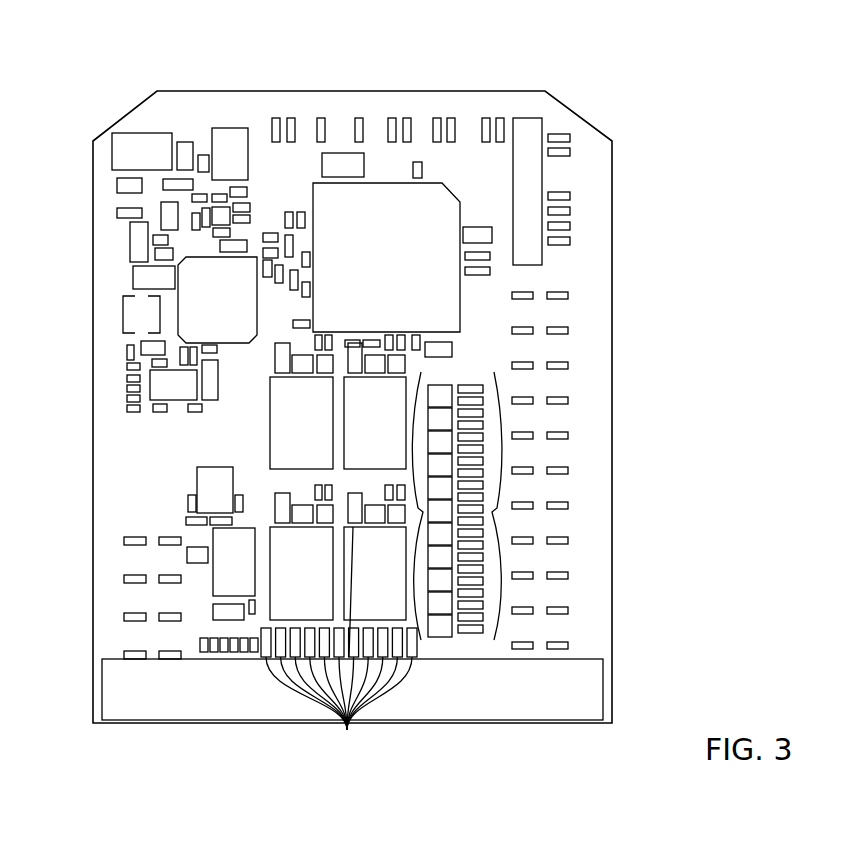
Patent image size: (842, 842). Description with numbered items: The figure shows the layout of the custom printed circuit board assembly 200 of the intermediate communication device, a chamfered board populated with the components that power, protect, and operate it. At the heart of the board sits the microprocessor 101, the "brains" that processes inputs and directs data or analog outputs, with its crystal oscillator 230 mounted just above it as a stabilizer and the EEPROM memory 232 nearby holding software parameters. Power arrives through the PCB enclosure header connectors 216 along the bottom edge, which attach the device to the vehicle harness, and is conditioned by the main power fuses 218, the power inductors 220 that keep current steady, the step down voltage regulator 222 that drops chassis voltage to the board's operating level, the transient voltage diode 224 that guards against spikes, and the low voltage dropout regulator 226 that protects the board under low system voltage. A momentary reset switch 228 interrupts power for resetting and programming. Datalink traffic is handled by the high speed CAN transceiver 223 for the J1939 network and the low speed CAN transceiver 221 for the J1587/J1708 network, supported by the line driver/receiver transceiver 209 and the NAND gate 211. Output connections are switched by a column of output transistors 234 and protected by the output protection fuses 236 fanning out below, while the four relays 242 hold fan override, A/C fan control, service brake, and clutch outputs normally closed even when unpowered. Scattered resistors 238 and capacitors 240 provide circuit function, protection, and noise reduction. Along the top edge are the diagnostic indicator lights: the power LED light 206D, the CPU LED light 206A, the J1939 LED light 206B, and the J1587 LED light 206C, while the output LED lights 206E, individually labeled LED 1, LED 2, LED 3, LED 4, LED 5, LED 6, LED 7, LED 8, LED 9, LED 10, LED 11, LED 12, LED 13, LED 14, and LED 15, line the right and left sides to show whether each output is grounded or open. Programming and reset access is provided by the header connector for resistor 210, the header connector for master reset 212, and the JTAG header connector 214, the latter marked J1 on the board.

The circuit board assembly 200 is at (566, 108).
The microprocessor 101 is at (400, 268).
The CPU LED light 206A is at (392, 118).
The J1939 LED light 206B is at (437, 118).
The J1587 LED light 206C is at (486, 118).
The power LED light 206D is at (276, 118).
The output LED lights 206E is at (568, 401).
The line driver/receiver transceiver 209 is at (229, 499).
The header connector for resistor 210 is at (163, 184).
The NAND gate 211 is at (248, 570).
The header connector for master reset 212 is at (492, 236).
The JTAG header connector 214 is at (545, 168).
The connector J1 is at (552, 182).
The PCB enclosure header connectors 216 is at (571, 705).
The main power fuses 218 is at (117, 212).
The power inductors 220 is at (231, 305).
The low speed CAN transceiver 221 is at (212, 610).
The step down voltage regulator 222 is at (188, 395).
The high speed CAN transceiver 223 is at (161, 210).
The transient voltage diode 224 is at (168, 287).
The low voltage dropout regulator 226 is at (155, 161).
The momentary reset switch 228 is at (243, 166).
The crystal oscillator 230 is at (357, 174).
The EEPROM memory 232 is at (482, 350).
The output transistors 234 is at (457, 502).
The output protection fuses 236 is at (339, 640).
The resistors 238 is at (290, 118).
The capacitors 240 is at (359, 118).
The relays 242 is at (315, 433).
The element LED 1 is at (539, 286).
The element LED 2 is at (539, 321).
The element LED 3 is at (539, 356).
The element LED 4 is at (539, 391).
The element LED 5 is at (539, 426).
The element LED 6 is at (539, 461).
The element LED 7 is at (539, 496).
The element LED 8 is at (539, 531).
The element LED 9 is at (539, 566).
The element LED 10 is at (538, 601).
The element LED 11 is at (538, 636).
The element LED 12 is at (152, 532).
The element LED 13 is at (152, 570).
The element LED 14 is at (152, 608).
The element LED 15 is at (152, 646).